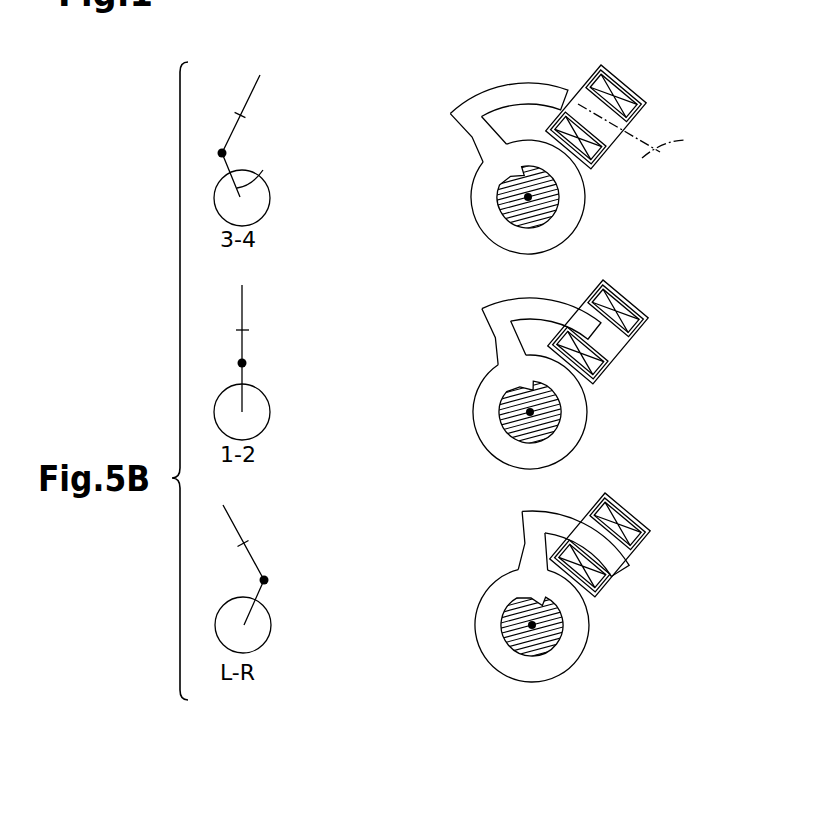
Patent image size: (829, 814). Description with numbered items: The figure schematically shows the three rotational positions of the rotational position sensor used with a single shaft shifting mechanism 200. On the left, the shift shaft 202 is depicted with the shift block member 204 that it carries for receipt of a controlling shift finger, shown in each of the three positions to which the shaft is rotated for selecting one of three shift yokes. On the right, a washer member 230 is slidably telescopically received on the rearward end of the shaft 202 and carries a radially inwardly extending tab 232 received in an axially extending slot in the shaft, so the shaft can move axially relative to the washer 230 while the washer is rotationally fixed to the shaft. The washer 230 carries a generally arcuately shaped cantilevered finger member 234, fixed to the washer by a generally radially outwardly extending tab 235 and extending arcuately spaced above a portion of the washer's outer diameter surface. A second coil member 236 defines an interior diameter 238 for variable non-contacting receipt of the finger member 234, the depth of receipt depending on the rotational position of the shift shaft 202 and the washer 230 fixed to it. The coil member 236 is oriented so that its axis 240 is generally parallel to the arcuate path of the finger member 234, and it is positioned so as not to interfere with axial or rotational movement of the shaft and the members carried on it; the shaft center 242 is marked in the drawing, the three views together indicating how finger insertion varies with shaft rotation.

The single shaft shifting mechanism 200 is at (368, 88).
The shift shaft 202 is at (260, 198).
The shift block member 204 is at (269, 163).
The washer member 230 is at (468, 198).
The radially inwardly extending tab 232 is at (502, 397).
The cantilevered finger member 234 is at (510, 98).
The radially outwardly extending tab 235 is at (472, 137).
The second coil member 236 is at (633, 72).
The interior diameter 238 is at (636, 104).
The axis 240 is at (684, 140).
The shaft pivot center 242 is at (559, 196).